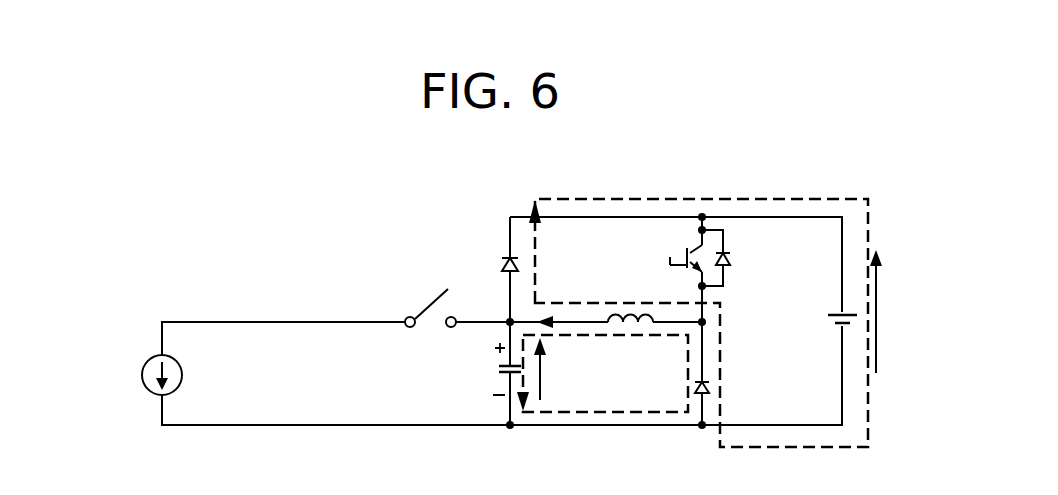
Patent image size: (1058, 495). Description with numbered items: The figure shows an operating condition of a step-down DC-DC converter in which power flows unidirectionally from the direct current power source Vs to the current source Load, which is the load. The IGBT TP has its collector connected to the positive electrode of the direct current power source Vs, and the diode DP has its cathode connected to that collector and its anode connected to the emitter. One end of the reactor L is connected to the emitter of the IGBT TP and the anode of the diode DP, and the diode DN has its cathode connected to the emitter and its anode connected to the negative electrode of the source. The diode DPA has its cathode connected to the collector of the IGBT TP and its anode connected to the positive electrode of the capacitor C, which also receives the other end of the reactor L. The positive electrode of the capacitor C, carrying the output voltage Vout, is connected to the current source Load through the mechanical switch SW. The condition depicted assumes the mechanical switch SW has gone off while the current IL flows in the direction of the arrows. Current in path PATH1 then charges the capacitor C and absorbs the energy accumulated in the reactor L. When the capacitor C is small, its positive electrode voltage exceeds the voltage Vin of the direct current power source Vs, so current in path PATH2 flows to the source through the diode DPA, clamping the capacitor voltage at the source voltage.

The current source Load is at (127, 375).
The output voltage Vout is at (407, 369).
The mechanical switch SW is at (433, 328).
The diode DPA is at (485, 250).
The capacitor C is at (501, 369).
The current IL is at (559, 303).
The reactor L is at (630, 300).
The IGBT TP is at (667, 258).
The diode DP is at (740, 258).
The diode DN is at (708, 385).
The direct current power source Vs is at (827, 317).
The voltage Vin is at (899, 311).
The path 1 PATH1 is at (602, 398).
The path 2 PATH2 is at (698, 303).